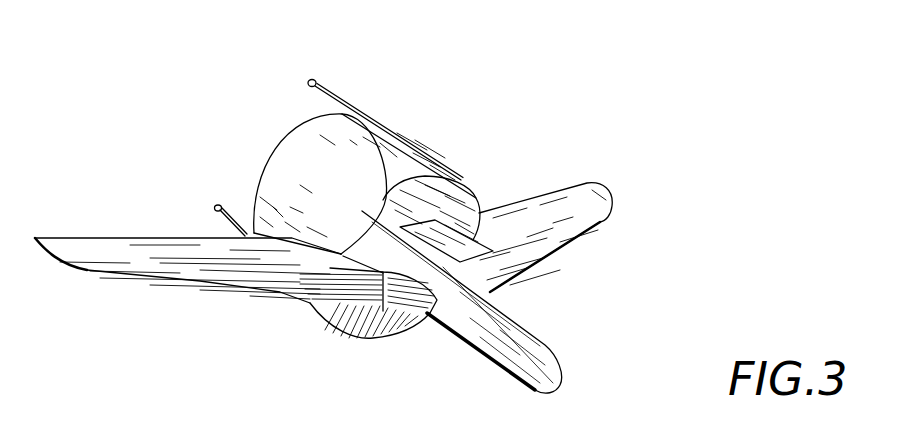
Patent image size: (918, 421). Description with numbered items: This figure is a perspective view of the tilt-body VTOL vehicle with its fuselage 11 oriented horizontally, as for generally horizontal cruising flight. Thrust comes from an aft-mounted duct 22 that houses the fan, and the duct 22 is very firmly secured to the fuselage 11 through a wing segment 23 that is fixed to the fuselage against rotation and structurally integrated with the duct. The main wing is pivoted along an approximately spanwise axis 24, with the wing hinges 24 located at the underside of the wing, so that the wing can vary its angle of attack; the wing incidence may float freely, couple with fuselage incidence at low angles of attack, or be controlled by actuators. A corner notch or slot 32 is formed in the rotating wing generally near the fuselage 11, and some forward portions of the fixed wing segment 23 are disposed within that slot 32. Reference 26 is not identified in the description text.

The fuselage 11 is at (540, 358).
The duct 22 is at (306, 158).
The fixed wing segment 23 is at (452, 252).
The spanwise pivot axis / wing hinges 24 is at (305, 278).
The antennas 26 is at (313, 79).
The corner notch or slot 32 is at (293, 258).